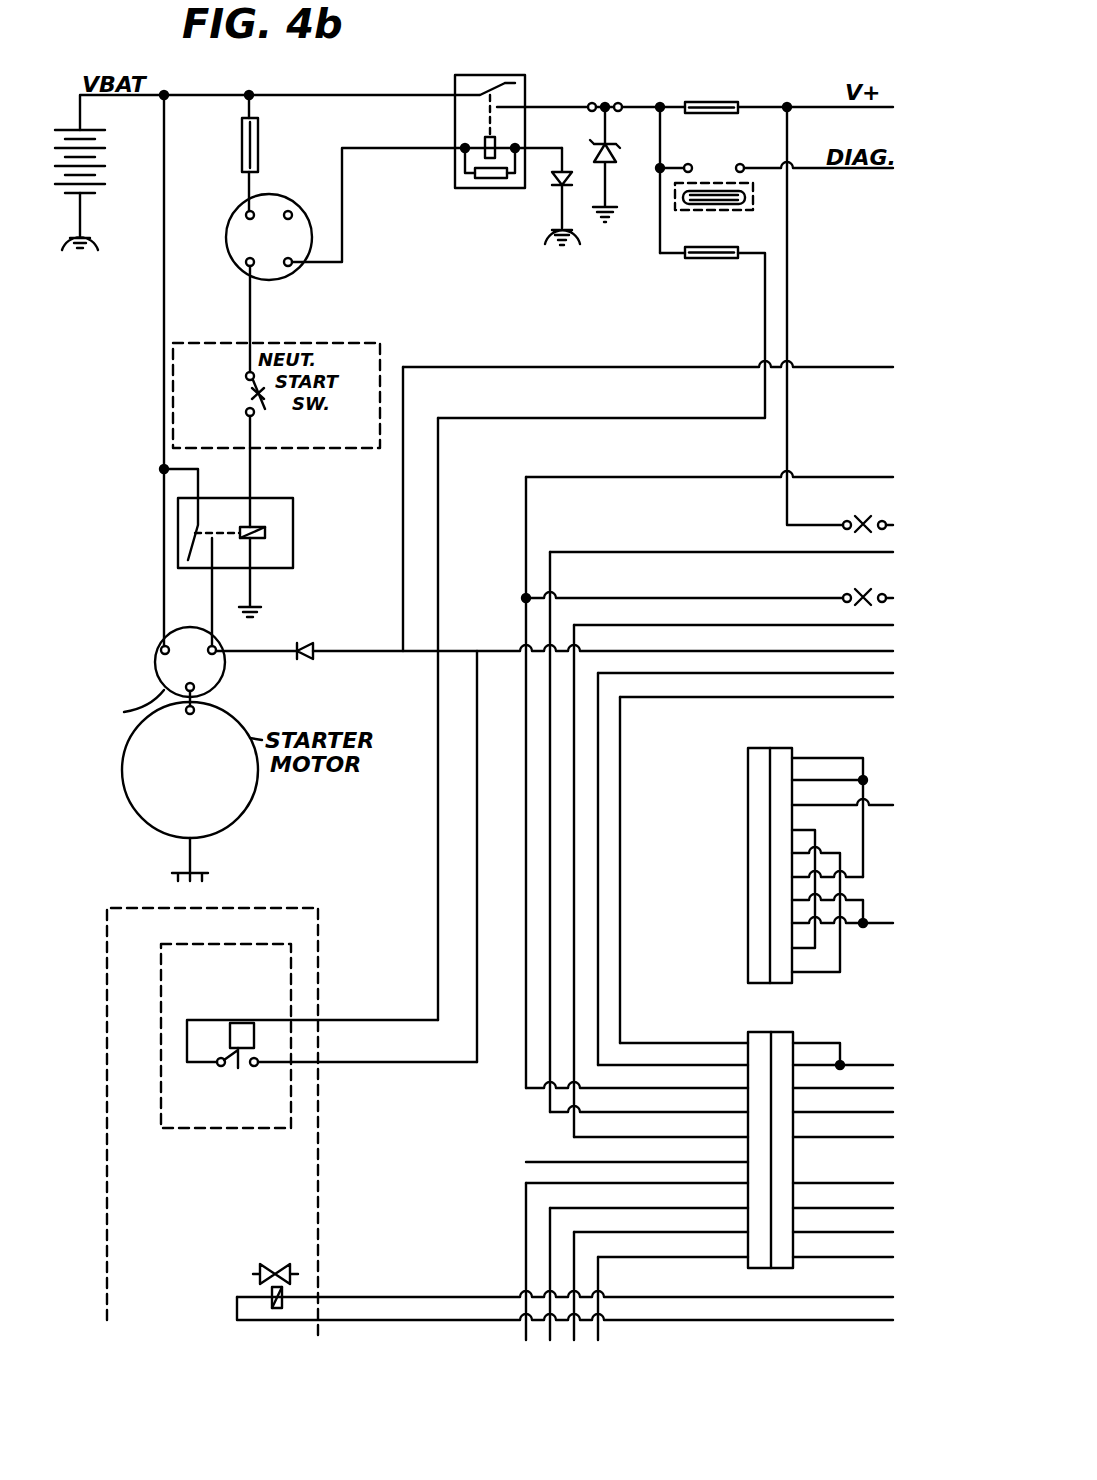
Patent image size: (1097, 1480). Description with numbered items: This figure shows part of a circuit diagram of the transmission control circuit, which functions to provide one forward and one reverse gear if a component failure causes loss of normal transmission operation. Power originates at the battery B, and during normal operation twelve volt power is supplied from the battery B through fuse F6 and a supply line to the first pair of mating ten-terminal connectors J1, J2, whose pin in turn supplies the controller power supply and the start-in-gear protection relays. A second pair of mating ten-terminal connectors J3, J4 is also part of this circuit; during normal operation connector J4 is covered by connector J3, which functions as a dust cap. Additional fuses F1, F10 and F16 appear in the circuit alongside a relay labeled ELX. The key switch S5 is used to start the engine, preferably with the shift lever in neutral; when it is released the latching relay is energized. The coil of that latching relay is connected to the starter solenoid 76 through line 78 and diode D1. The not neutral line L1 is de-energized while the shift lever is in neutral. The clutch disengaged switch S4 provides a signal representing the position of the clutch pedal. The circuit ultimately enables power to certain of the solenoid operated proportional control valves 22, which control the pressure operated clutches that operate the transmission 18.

The line 78 is at (541, 367).
The starter solenoid 76 is at (158, 648).
The transmission 18 is at (297, 908).
The solenoid operated proportional control valves 22 is at (275, 1256).
The diode D1 is at (309, 664).
The clutch disengagement switch S4 is at (840, 590).
The key switch S5 is at (294, 203).
The not neutral line L1 is at (859, 477).
The fuse F1 is at (601, 320).
The fuse F6 is at (774, 92).
The fuse F10 is at (774, 180).
The fuse F16 is at (275, 153).
The connector J1 is at (748, 1035).
The connector J2 is at (793, 1035).
The connector J3 is at (748, 760).
The connector J4 is at (792, 752).
The battery B is at (96, 131).
The ELX relay ELX is at (521, 119).